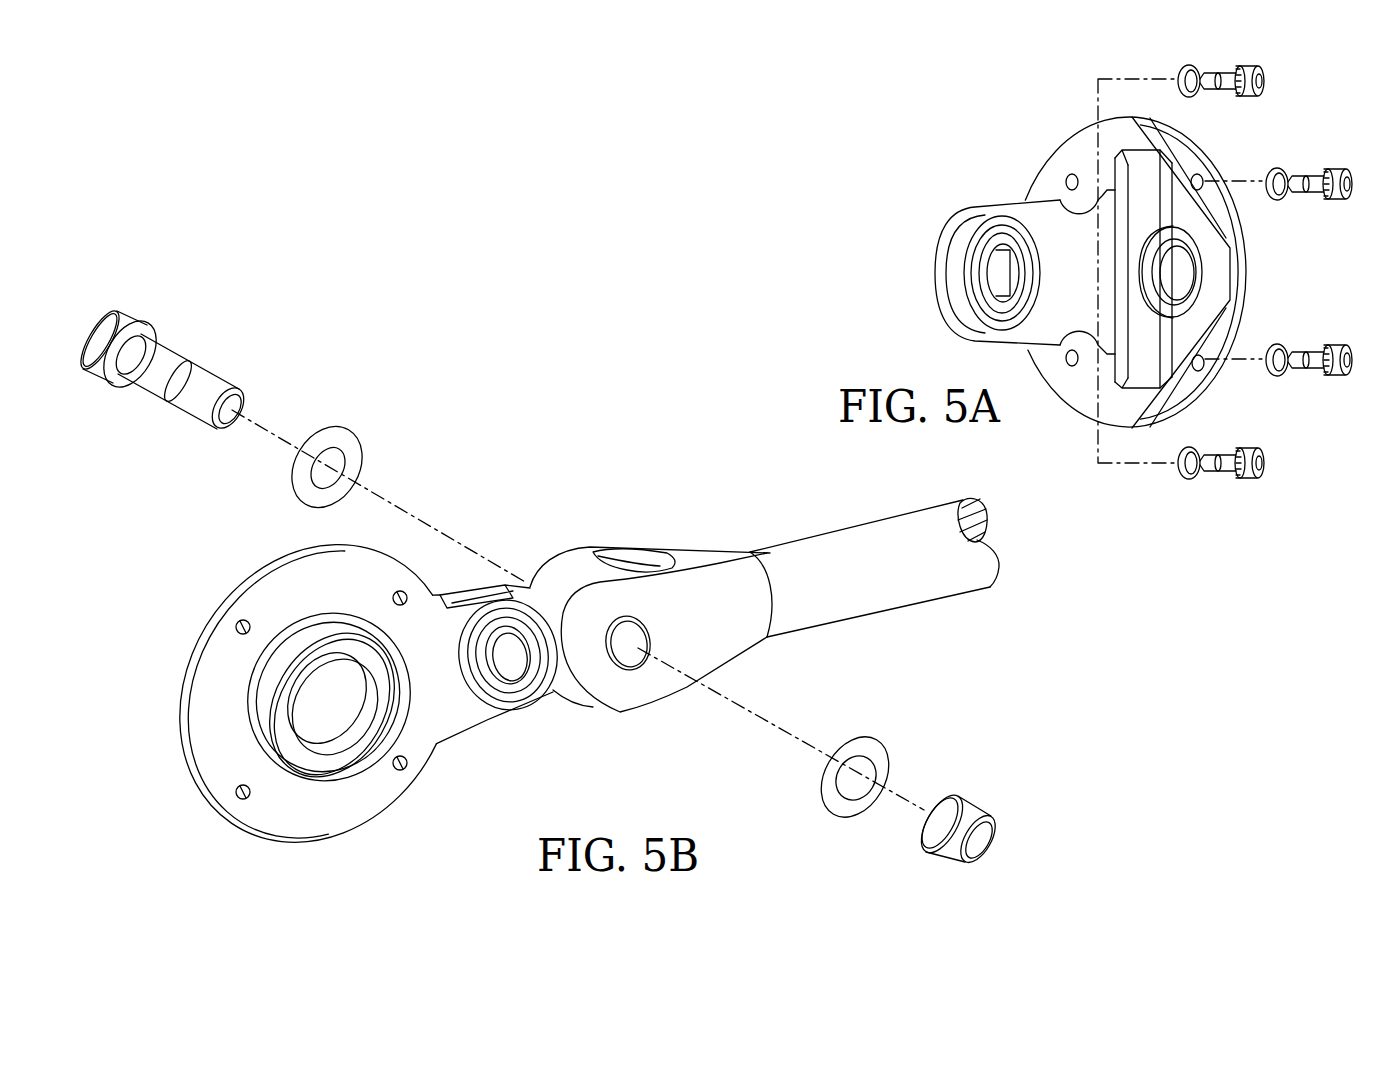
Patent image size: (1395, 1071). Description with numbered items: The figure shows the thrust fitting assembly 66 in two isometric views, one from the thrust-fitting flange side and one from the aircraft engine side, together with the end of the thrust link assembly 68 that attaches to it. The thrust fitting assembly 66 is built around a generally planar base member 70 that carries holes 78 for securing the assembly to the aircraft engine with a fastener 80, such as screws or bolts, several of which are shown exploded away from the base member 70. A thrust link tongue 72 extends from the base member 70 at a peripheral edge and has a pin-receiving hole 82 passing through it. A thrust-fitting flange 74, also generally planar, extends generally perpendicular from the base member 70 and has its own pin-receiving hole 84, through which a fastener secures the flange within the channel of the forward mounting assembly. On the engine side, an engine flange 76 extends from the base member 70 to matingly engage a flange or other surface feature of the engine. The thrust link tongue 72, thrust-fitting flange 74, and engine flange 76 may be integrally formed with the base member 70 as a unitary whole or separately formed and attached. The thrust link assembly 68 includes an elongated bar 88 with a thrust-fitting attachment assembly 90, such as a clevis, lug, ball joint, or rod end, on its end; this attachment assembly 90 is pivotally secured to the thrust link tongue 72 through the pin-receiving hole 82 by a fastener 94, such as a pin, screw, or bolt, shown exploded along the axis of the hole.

In FIG. 5A, the thrust fitting assembly 66 is at (944, 142).
In FIG. 5B, the thrust fitting assembly 66 is at (187, 547).
In FIG. 5B, the thrust link assembly 68 is at (812, 493).
In FIG. 5A, the base member 70 is at (1180, 146).
In FIG. 5B, the base member 70 is at (200, 712).
In FIG. 5A, the thrust link tongue 72 is at (946, 243).
In FIG. 5B, the thrust link tongue 72 is at (637, 717).
In FIG. 5A, the thrust-fitting flange 74 is at (1233, 258).
In FIG. 5B, the engine flange 76 is at (337, 777).
In FIG. 5A, the holes 78 is at (1076, 180).
In FIG. 5B, the holes 78 is at (236, 628).
In FIG. 5A, the fastener 80 is at (1344, 172).
In FIG. 5A, the pin-receiving hole 82 is at (1000, 268).
In FIG. 5B, the pin-receiving hole 82 is at (508, 665).
In FIG. 5A, the pin-receiving hole 84 is at (1187, 272).
In FIG. 5B, the elongated bar 88 is at (926, 578).
In FIG. 5B, the thrust-fitting attachment assembly 90 is at (721, 574).
In FIG. 5B, the fastener 94 is at (175, 360).